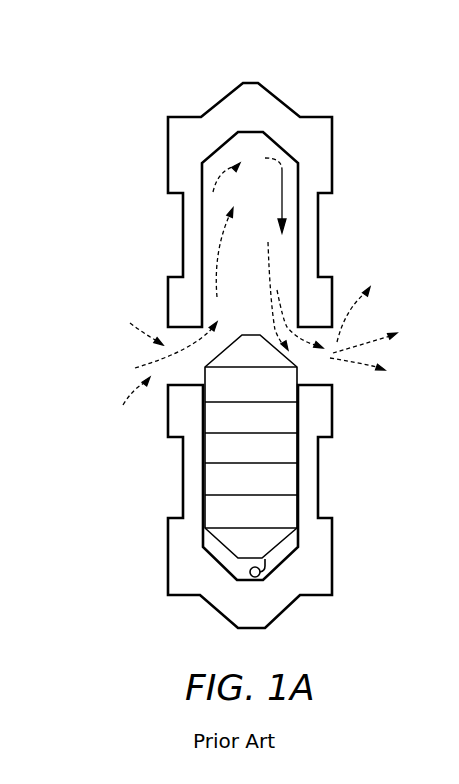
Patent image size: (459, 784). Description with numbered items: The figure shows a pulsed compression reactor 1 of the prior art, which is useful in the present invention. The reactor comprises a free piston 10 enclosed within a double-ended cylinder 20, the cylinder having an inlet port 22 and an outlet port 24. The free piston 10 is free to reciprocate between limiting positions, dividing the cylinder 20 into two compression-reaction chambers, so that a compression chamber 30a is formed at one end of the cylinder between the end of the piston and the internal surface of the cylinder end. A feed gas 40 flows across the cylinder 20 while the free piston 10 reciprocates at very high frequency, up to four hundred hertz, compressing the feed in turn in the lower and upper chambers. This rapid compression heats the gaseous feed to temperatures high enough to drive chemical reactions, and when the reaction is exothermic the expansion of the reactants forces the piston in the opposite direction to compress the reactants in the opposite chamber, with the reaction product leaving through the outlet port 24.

The compression reactor 1 is at (282, 56).
The free piston 10 is at (262, 459).
The double-ended cylinder 20 is at (335, 172).
The inlet port 22 is at (178, 373).
The outlet port 24 is at (327, 368).
The compression chamber 30a is at (260, 580).
The feed gas 40 is at (137, 357).